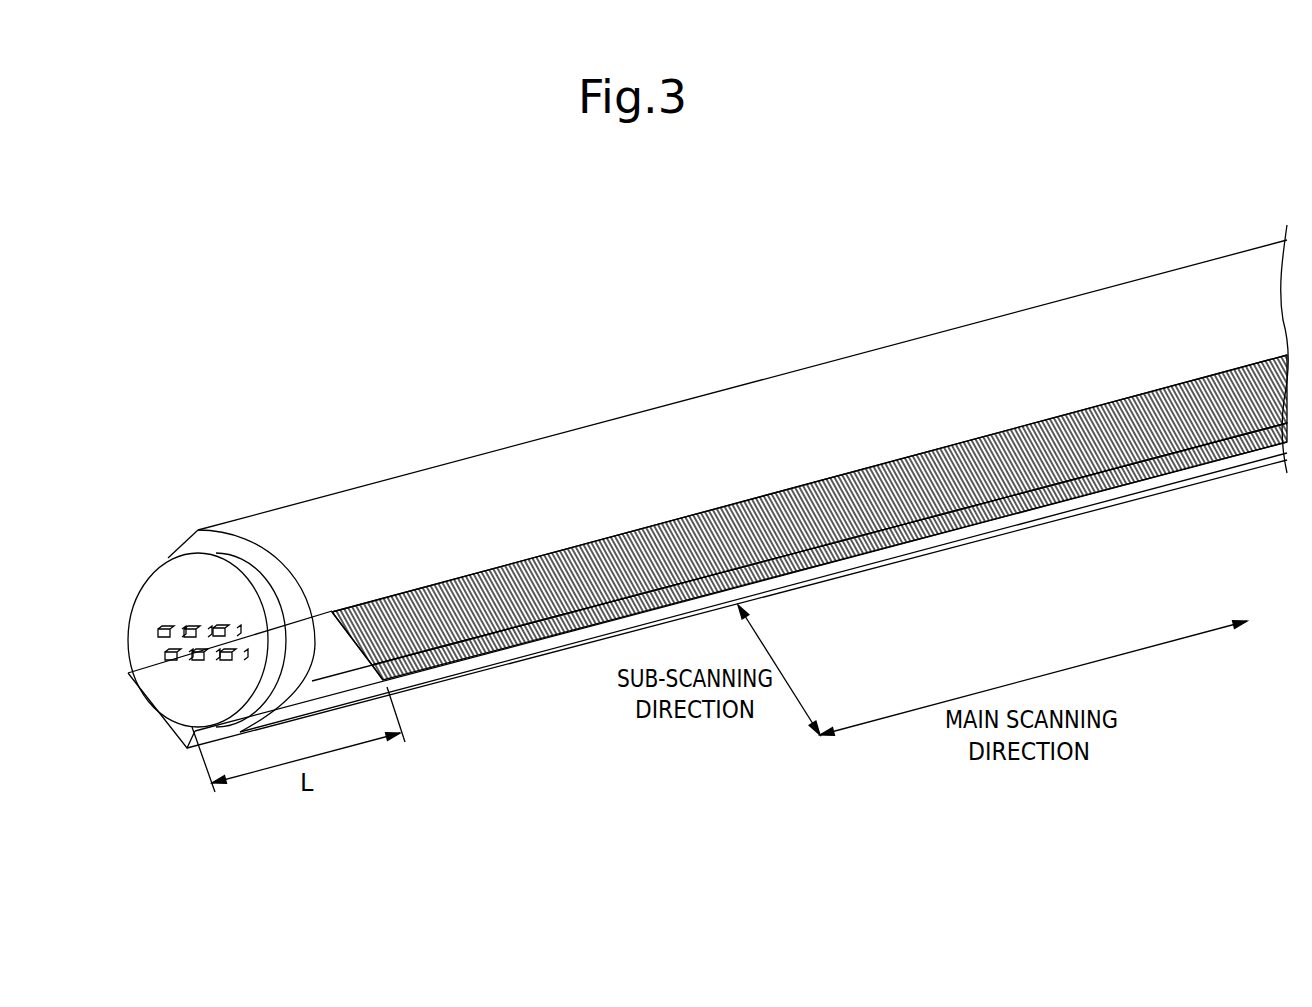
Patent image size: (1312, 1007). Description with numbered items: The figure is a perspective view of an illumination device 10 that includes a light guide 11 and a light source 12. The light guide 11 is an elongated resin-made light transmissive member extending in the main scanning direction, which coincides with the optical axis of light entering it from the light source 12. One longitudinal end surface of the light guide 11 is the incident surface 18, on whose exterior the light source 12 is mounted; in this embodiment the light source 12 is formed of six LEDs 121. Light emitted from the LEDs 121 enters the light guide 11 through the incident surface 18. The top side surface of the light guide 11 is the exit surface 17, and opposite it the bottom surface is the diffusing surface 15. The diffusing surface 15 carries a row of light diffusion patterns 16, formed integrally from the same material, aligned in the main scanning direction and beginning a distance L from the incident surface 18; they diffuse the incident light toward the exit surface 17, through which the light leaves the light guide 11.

The illumination device 10 is at (712, 318).
The light guide 11 is at (874, 345).
The light source 12 is at (135, 588).
The LED 121 is at (216, 637).
The diffusing surface 15 is at (453, 650).
The light diffusion patterns 16 is at (600, 627).
The exit surface 17 is at (985, 332).
The incident surface 18 is at (248, 550).